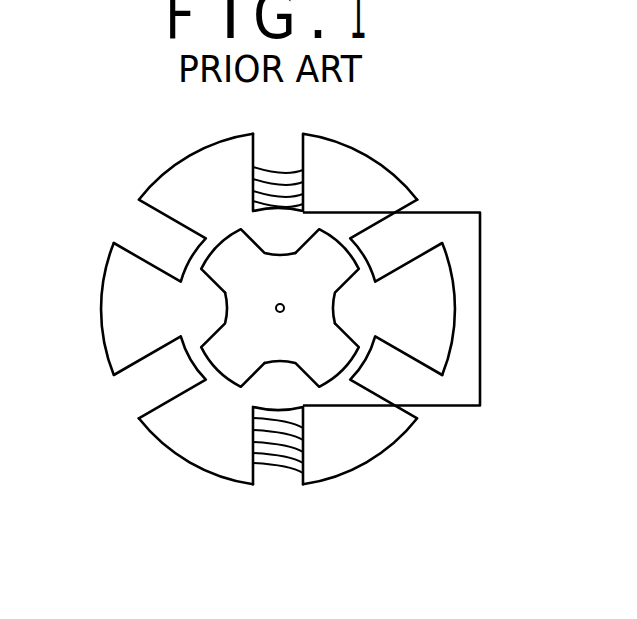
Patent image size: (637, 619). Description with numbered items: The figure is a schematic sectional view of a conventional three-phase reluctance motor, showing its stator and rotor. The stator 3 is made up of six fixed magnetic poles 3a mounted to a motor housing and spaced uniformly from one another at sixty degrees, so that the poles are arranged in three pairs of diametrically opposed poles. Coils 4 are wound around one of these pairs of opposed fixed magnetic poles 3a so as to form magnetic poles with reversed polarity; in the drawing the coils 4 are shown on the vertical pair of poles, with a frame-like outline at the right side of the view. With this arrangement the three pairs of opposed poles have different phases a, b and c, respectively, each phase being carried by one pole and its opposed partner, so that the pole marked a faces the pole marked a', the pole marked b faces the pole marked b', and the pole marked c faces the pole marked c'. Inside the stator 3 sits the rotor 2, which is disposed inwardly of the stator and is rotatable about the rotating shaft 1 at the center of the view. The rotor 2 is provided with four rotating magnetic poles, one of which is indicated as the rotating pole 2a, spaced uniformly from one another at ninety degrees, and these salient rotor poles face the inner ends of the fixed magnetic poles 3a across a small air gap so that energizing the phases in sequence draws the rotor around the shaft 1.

The rotating shaft 1 is at (276, 308).
The rotor 2 is at (313, 367).
The rotor pole 2a is at (325, 372).
The stator 3 is at (253, 319).
The fixed magnetic poles 3a is at (151, 414).
The coils 4 is at (480, 406).
The phase a is at (303, 164).
The stator pole a' is at (268, 464).
The phase b is at (183, 208).
The stator pole b' is at (372, 410).
The phase c is at (153, 330).
The stator pole c' is at (402, 287).